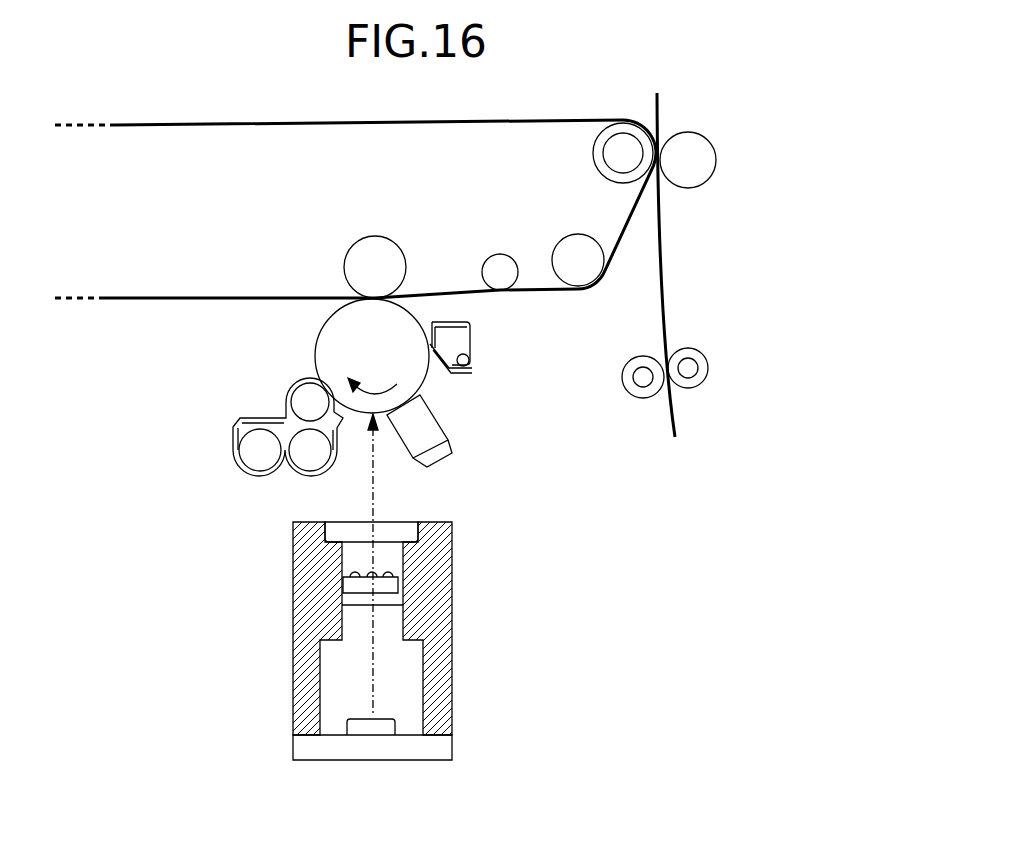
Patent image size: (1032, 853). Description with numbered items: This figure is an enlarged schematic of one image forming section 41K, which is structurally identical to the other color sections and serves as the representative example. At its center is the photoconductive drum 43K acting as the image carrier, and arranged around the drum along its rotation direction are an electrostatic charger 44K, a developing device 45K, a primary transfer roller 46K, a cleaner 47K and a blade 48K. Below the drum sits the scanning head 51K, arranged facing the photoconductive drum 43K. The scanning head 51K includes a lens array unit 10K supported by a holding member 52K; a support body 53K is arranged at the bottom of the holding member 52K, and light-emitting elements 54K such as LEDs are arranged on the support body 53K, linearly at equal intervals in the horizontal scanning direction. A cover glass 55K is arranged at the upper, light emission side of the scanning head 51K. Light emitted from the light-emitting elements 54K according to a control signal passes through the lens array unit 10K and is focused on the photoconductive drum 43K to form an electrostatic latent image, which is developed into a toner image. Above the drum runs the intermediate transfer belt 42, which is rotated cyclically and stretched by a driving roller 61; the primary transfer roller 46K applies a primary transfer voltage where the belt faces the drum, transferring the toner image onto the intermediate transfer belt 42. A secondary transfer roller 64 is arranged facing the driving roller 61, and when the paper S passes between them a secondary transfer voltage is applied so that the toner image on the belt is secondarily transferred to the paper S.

The intermediate transfer belt 42 is at (252, 128).
The primary transfer roller 46K is at (376, 235).
The driving roller 61 is at (591, 151).
The secondary transfer roller 64 is at (717, 172).
The paper S is at (662, 292).
The image forming section 41K is at (237, 374).
The photoconductive drum 43K is at (313, 345).
The electrostatic charger 44K is at (436, 431).
The developing device 45K is at (232, 440).
The cleaner 47K is at (471, 338).
The blade 48K is at (473, 371).
The scanning head 51K is at (487, 620).
The holding member 52K is at (432, 680).
The support body 53K is at (430, 746).
The light-emitting elements 54K is at (346, 729).
The cover glass 55K is at (395, 520).
The lens array unit 10K is at (396, 583).